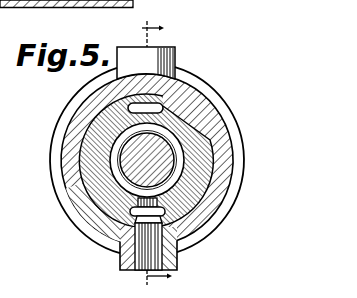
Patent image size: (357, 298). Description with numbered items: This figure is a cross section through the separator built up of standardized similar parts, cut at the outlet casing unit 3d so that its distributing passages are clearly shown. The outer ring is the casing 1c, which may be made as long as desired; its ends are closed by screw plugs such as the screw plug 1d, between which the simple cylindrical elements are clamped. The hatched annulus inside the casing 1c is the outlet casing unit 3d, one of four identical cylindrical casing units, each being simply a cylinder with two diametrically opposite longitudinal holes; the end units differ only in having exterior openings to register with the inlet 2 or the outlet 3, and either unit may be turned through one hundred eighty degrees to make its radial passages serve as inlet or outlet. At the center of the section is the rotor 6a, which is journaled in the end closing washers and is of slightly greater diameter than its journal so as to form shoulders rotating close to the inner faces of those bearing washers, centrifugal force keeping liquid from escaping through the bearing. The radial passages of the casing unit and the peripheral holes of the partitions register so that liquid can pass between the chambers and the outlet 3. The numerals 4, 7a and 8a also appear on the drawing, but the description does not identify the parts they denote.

The casing 1c is at (90, 121).
The screw plug 1d is at (72, 99).
The inlet 2 is at (163, 58).
The outlet 3 is at (120, 265).
The outlet casing unit 3d is at (92, 155).
The section line 4 is at (163, 153).
The rotor 6a is at (100, 197).
The bushing 7a is at (113, 165).
The shaft 8a is at (97, 187).